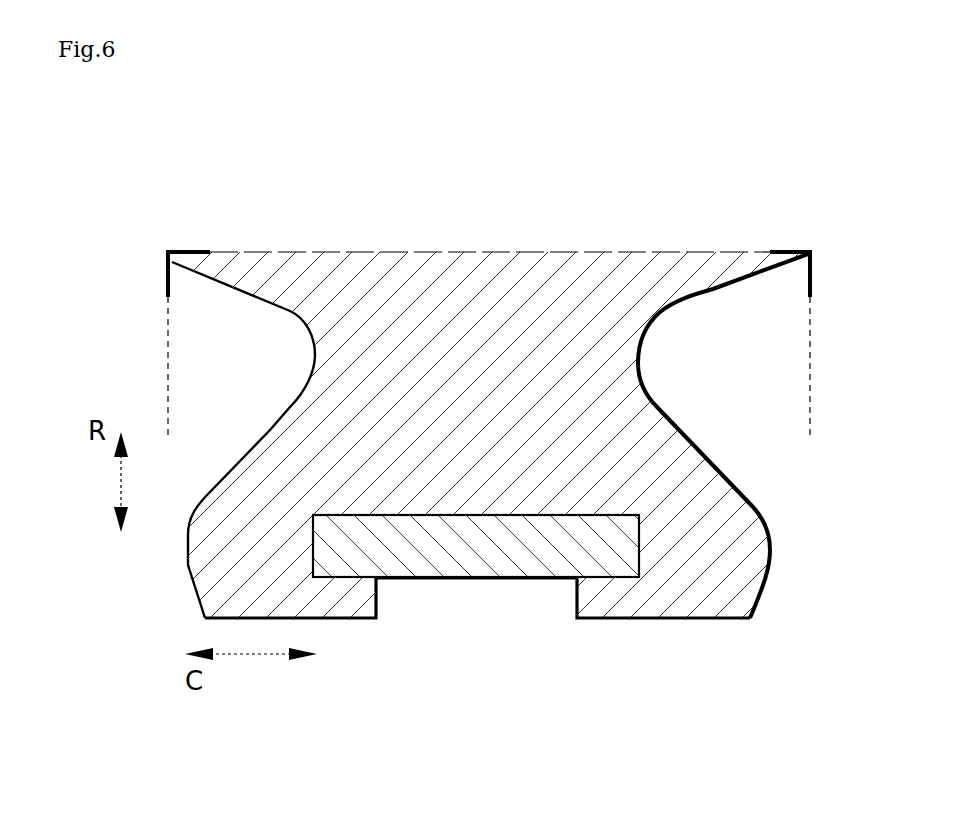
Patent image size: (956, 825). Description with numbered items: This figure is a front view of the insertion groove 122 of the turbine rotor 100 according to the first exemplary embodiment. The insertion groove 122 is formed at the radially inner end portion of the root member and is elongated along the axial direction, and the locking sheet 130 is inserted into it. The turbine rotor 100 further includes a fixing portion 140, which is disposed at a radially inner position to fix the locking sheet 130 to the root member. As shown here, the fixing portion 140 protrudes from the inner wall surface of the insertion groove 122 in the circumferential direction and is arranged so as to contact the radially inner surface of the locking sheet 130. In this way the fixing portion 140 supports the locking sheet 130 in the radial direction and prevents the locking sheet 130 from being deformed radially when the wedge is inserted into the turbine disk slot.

The turbine rotor 100 is at (147, 160).
The insertion groove 122 is at (314, 543).
The locking sheet 130 is at (523, 550).
The fixing portion 140 is at (357, 593).